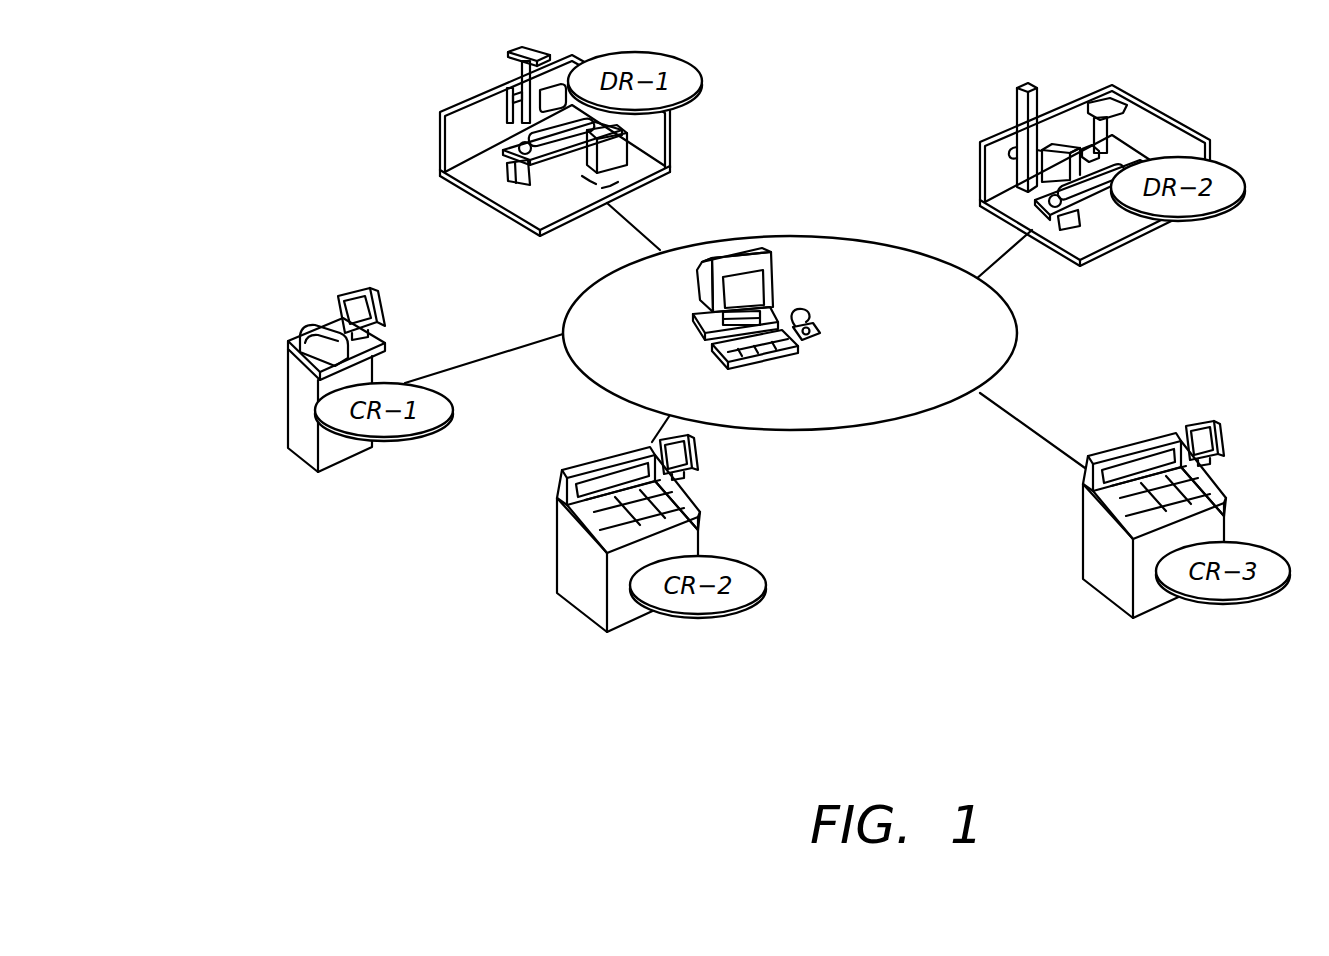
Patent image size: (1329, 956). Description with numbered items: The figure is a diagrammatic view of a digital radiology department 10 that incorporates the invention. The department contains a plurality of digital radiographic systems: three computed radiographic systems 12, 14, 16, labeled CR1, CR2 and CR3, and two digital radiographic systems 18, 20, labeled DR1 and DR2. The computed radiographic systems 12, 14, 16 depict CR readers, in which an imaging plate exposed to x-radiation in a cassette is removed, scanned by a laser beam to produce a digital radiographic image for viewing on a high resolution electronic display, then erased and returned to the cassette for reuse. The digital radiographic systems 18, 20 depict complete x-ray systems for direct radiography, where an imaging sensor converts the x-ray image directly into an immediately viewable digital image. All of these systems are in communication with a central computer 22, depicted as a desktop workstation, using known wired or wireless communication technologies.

The digital radiology department 10 is at (1125, 343).
The computed radiographic system 12 is at (242, 352).
The computed radiographic system 14 is at (533, 571).
The computed radiographic system 16 is at (1060, 552).
The digital radiographic system 18 is at (416, 100).
The digital radiographic system 20 is at (1242, 117).
The central computer 22 is at (676, 308).